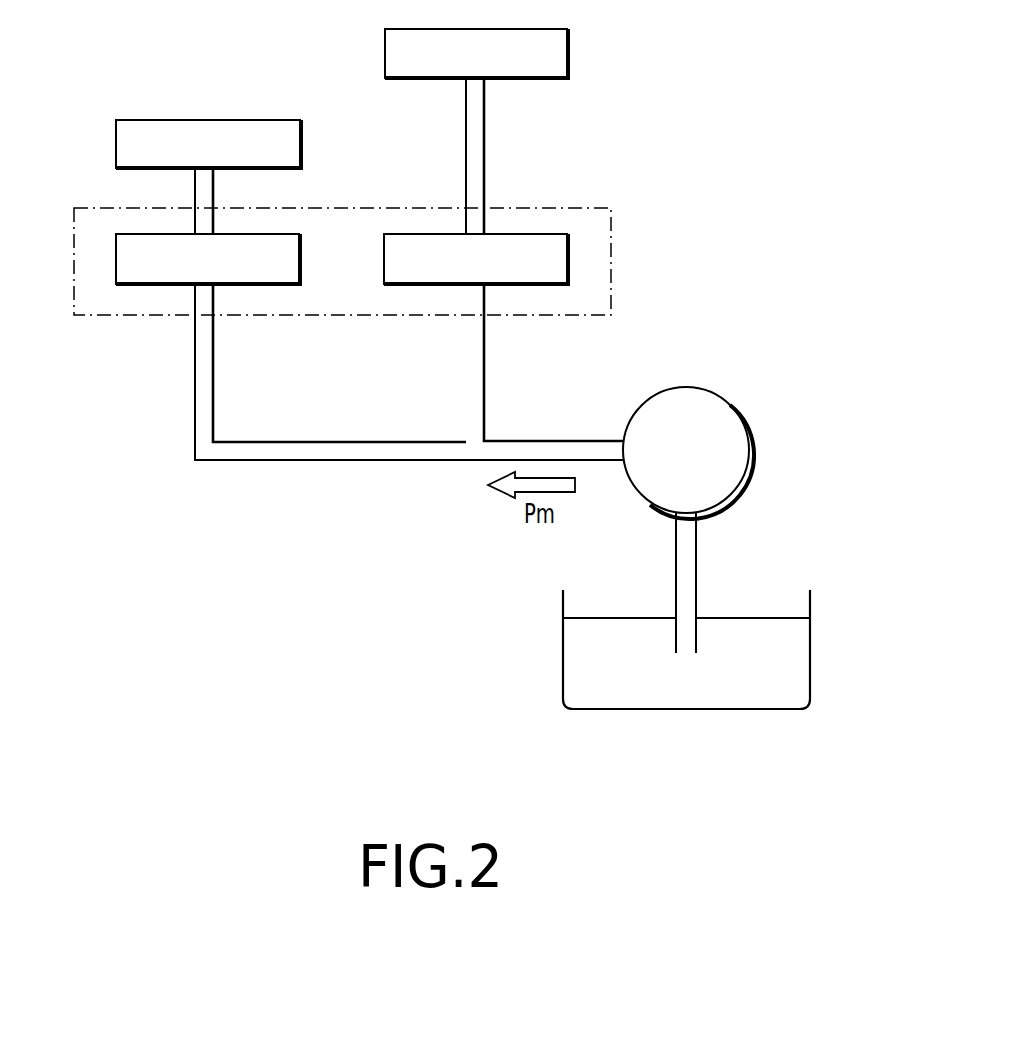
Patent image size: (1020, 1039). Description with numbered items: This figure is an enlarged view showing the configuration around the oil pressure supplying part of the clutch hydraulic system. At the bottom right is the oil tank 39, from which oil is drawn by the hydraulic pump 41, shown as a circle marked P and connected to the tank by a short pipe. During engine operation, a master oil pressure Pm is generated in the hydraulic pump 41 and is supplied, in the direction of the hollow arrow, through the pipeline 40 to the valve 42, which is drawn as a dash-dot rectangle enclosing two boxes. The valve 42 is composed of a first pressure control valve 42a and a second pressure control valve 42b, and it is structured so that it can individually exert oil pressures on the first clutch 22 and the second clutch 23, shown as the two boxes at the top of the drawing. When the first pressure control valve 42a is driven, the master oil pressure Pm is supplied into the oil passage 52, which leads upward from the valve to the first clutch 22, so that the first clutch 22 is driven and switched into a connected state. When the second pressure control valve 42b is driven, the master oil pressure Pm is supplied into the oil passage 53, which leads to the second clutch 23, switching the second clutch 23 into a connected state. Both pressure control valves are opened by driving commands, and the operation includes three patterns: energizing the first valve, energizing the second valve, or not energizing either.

The first clutch 22 is at (386, 46).
The second clutch 23 is at (119, 124).
The oil tank 39 is at (822, 676).
The pipeline 40 is at (409, 452).
The hydraulic pump 41 is at (745, 412).
The valve 42 is at (548, 315).
The first pressure control valve 42a is at (422, 245).
The second pressure control valve 42b is at (146, 278).
The oil passage 52 is at (476, 136).
The oil passage 53 is at (203, 193).